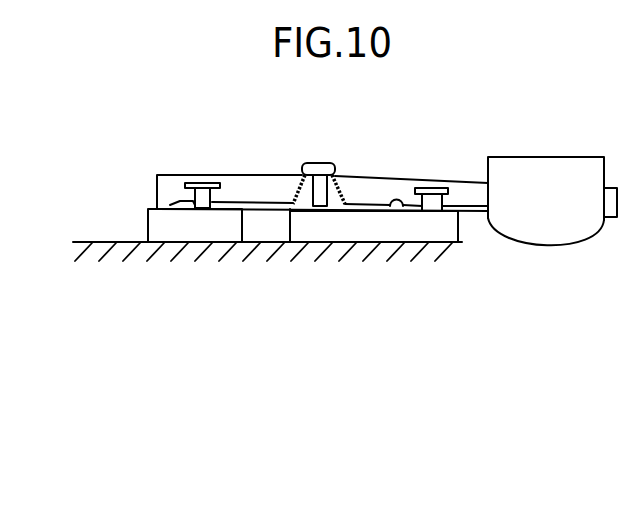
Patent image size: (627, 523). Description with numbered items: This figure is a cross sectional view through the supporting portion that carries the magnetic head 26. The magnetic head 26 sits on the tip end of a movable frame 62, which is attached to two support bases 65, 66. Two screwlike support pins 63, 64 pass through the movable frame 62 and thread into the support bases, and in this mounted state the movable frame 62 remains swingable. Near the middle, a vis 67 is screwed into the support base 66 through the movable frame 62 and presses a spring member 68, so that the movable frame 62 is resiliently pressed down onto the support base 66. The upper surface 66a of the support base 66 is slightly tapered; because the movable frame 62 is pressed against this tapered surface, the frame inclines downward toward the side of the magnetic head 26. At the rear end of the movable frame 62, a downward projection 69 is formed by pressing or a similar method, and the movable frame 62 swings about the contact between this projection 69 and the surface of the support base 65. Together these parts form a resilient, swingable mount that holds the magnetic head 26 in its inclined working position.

The magnetic head 26 is at (567, 162).
The movable frame 62 is at (470, 180).
The support pin 63 is at (204, 182).
The support pin 64 is at (433, 187).
The support base 65 is at (192, 232).
The support base 66 is at (370, 228).
The upper surface 66a is at (394, 209).
The vis 67 is at (327, 163).
The spring member 68 is at (300, 182).
The projection 69 is at (155, 207).